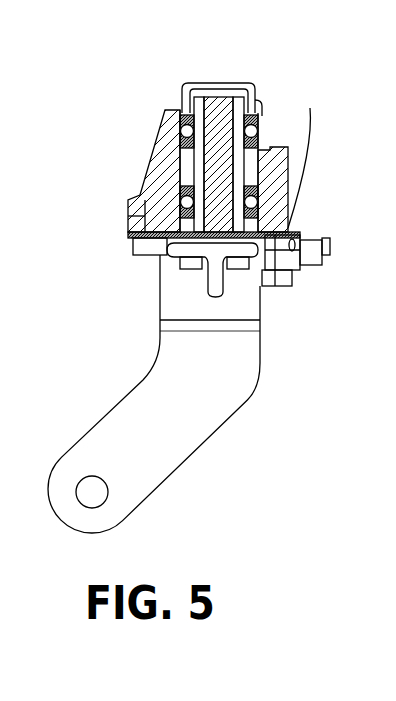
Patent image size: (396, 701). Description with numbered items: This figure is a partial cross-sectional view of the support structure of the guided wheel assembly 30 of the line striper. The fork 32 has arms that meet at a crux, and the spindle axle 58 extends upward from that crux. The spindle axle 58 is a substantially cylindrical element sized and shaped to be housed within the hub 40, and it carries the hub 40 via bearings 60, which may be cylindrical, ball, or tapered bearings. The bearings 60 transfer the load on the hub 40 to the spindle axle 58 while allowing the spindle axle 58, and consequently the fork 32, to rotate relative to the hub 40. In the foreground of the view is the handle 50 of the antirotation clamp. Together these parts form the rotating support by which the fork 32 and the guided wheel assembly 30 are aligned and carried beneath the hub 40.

The guided wheel assembly 30 is at (215, 394).
The fork 32 is at (190, 427).
The hub 40 is at (165, 110).
The handle 50 is at (222, 263).
The spindle axle 58 is at (203, 165).
The bearings 60 is at (255, 141).